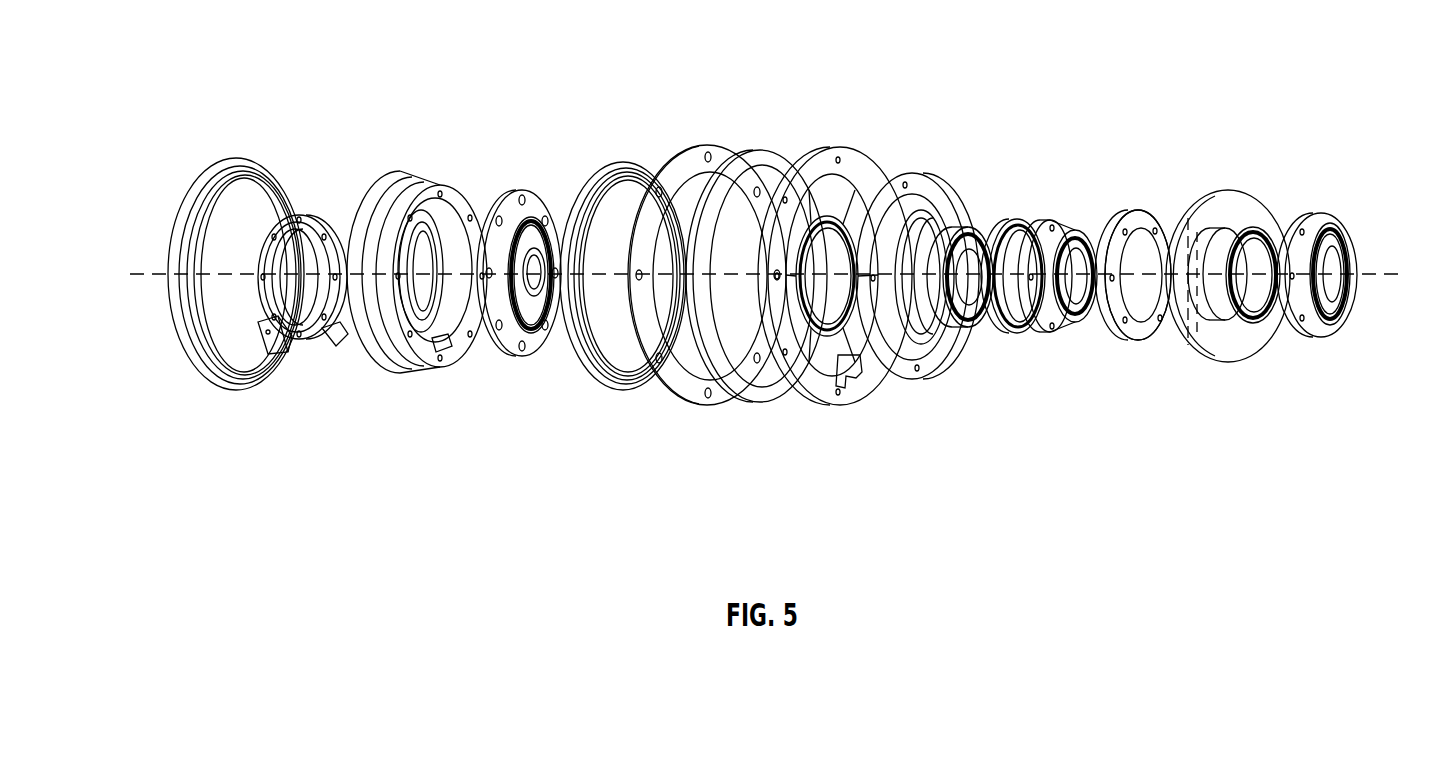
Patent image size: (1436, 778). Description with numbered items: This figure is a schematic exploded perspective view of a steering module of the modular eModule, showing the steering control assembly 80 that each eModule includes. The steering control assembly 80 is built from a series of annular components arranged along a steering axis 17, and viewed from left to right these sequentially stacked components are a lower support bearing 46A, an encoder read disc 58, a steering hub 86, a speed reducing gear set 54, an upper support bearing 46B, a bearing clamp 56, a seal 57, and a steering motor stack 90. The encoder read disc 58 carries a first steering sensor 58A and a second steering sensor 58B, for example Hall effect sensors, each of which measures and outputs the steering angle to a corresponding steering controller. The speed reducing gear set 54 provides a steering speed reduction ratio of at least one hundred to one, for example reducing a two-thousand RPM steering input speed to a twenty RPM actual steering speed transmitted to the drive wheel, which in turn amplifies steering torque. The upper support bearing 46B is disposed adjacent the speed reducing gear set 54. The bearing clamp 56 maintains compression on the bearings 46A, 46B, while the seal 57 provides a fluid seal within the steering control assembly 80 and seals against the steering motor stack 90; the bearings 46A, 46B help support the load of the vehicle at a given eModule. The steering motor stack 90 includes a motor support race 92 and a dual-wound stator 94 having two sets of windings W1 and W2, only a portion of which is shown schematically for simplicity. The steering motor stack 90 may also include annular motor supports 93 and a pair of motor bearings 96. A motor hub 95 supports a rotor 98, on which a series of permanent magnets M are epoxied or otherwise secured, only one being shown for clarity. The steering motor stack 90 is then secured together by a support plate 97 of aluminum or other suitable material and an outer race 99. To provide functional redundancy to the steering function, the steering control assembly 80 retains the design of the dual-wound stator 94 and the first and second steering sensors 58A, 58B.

The steering axis 17 is at (150, 270).
The steering control assembly 80 is at (1190, 62).
The lower support bearing 46A is at (240, 200).
The upper support bearing 46B is at (612, 163).
The speed reducing gear set 54 is at (523, 193).
The bearing clamp 56 is at (695, 147).
The seal 57 is at (764, 150).
The encoder read disc 58 is at (305, 215).
The first steering sensor 58A is at (240, 386).
The second steering sensor 58B is at (340, 340).
The steering hub 86 is at (445, 168).
The steering motor stack 90 is at (1320, 432).
The motor support race 92 is at (845, 146).
The annular motor supports 93 is at (965, 228).
The dual-wound stator 94 is at (905, 172).
The motor hub 95 is at (1072, 333).
The motor bearings 96 is at (1003, 228).
The support plate 97 is at (1222, 364).
The rotor 98 is at (1125, 340).
The outer race 99 is at (1318, 340).
The permanent magnets M is at (1118, 238).
The first set of windings W1 is at (928, 195).
The second set of windings W2 is at (940, 188).